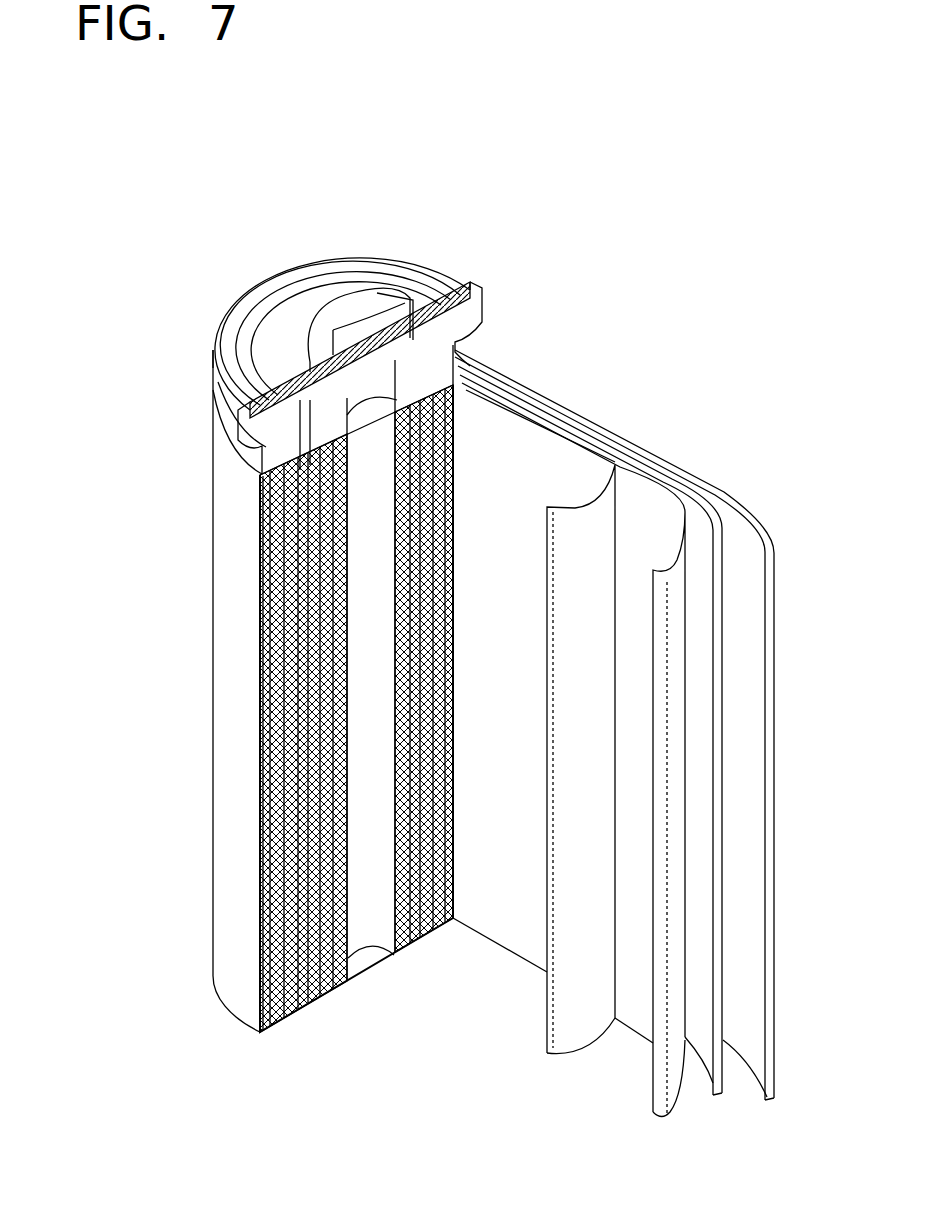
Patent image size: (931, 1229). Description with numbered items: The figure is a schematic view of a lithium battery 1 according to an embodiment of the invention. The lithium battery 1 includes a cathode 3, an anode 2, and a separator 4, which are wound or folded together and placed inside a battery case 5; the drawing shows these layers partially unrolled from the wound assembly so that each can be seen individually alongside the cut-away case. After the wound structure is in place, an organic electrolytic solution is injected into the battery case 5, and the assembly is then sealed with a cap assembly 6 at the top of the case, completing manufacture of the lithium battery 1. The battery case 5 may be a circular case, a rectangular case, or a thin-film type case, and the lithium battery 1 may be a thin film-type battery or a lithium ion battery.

The lithium battery 1 is at (636, 277).
The anode 2 is at (757, 512).
The cathode 3 is at (668, 538).
The separator 4 is at (585, 498).
The battery case 5 is at (214, 690).
The cap assembly 6 is at (340, 300).